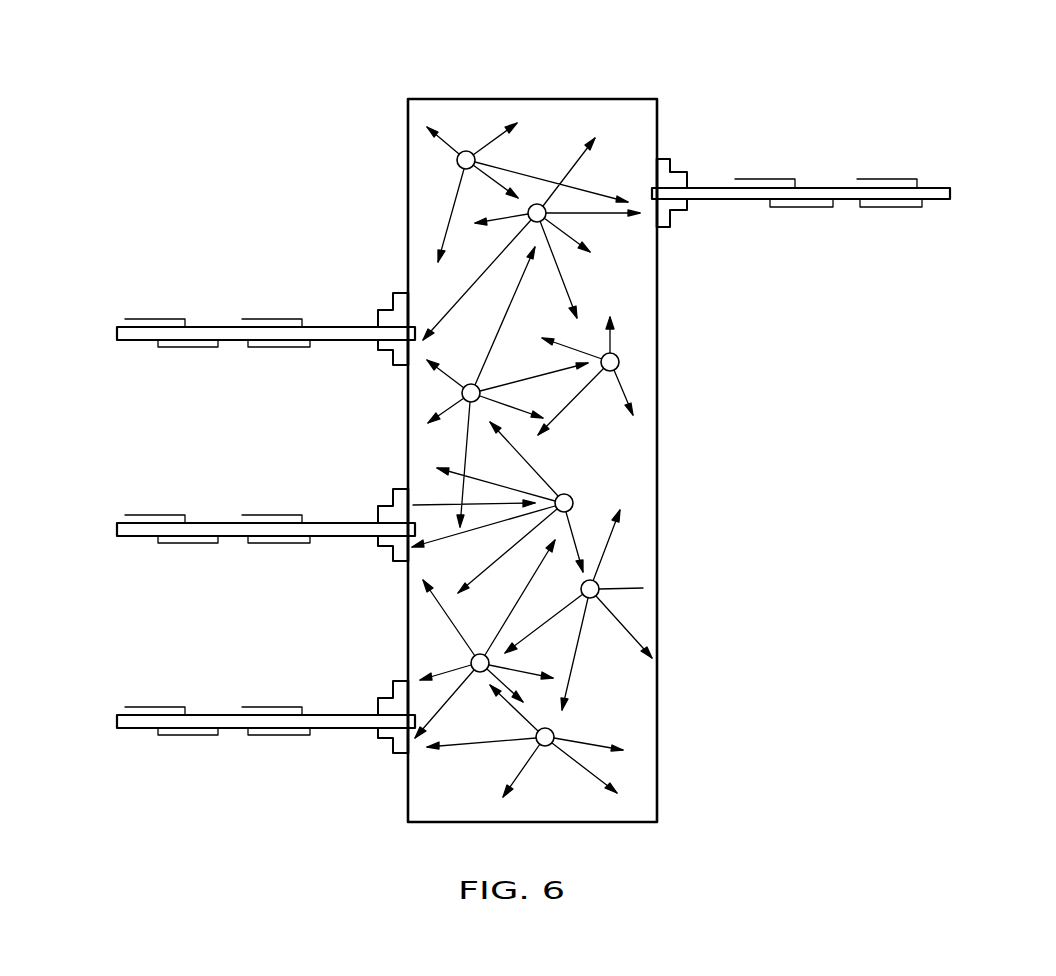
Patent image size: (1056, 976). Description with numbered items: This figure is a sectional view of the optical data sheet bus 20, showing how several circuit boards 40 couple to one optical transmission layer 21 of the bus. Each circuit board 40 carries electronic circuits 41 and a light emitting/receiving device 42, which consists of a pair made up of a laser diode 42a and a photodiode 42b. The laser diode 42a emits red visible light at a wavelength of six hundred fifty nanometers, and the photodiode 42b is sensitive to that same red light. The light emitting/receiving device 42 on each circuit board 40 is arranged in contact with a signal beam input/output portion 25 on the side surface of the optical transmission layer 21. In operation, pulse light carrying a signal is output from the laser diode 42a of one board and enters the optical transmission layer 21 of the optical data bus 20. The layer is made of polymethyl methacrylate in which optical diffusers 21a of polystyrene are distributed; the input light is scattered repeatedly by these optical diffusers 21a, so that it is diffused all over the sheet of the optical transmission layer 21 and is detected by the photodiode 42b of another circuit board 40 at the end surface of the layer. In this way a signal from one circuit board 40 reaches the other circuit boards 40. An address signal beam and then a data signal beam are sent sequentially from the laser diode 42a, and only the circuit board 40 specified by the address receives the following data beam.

The optical data bus 20 is at (500, 83).
The optical transmission layer 21 is at (645, 107).
The optical diffusers 21a is at (573, 505).
The signal beam input/output portion 25 is at (369, 321).
The circuit board 40 is at (117, 337).
The electronic circuits 41 is at (255, 319).
The light emitting/receiving device 42 is at (544, 481).
The laser diode 42a is at (392, 315).
The photodiode 42b is at (398, 357).